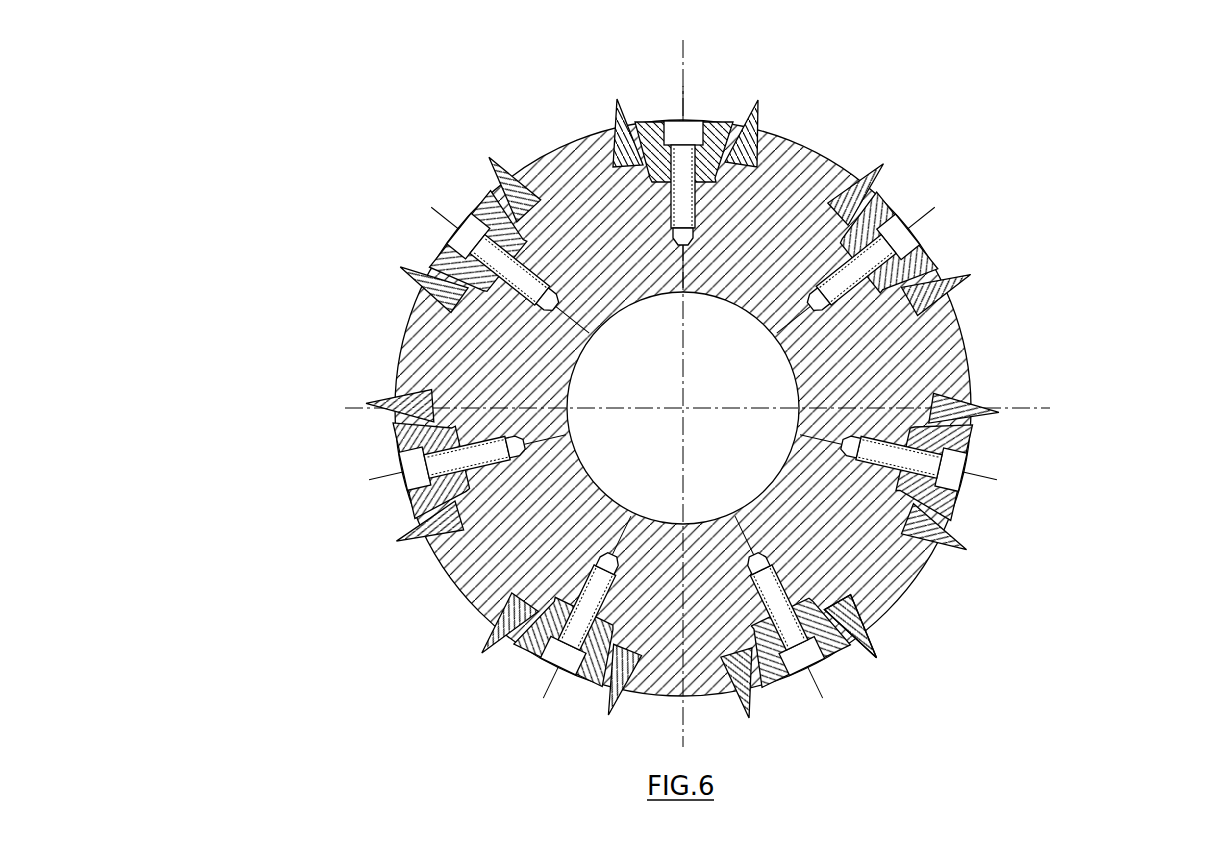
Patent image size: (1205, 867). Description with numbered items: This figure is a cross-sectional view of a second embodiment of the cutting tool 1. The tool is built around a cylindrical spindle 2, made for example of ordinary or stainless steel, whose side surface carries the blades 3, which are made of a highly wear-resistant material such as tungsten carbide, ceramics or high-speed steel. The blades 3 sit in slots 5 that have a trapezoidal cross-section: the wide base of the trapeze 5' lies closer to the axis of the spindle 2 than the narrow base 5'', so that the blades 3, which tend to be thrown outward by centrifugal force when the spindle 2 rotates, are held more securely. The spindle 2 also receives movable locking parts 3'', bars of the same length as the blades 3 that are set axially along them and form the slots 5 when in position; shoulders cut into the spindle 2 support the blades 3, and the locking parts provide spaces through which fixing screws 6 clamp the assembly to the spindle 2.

The cutting tool 1 is at (326, 315).
The cylindrical spindle 2 is at (920, 373).
The blades 3 is at (954, 210).
The movable locking parts 3'' is at (1047, 432).
The slots 5 is at (937, 579).
The wide base of the trapeze 5' is at (881, 645).
The narrow base 5'' is at (852, 663).
The fixing screws 6 is at (957, 467).